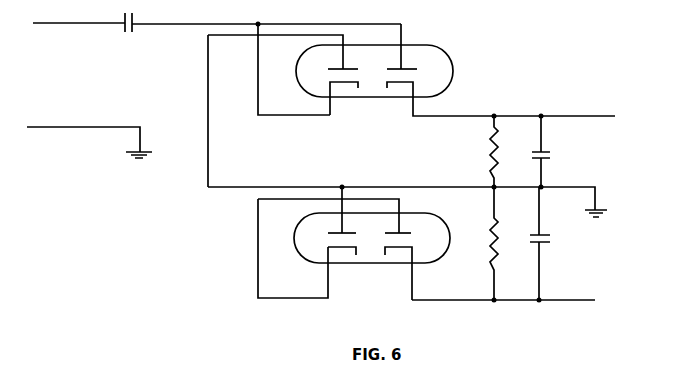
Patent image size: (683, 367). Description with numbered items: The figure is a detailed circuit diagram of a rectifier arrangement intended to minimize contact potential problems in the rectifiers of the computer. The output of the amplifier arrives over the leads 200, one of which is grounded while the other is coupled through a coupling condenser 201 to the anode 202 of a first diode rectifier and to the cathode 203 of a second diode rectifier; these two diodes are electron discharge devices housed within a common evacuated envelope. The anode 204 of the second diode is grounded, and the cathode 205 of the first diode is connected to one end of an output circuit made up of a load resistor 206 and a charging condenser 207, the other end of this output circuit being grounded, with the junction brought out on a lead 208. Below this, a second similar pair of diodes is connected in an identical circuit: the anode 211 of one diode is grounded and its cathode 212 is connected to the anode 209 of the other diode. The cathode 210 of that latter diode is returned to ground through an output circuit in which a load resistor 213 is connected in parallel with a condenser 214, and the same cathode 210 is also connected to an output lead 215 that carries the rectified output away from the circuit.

The leads 200 is at (68, 23).
The coupling condenser 201 is at (133, 27).
The anode 202 is at (404, 68).
The cathode 203 is at (330, 88).
The anode 204 is at (342, 67).
The cathode 205 is at (413, 89).
The load resistor 206 is at (490, 146).
The charging condenser 207 is at (547, 153).
The output lead 208 is at (553, 117).
The anode 209 is at (408, 233).
The cathode 210 is at (412, 248).
The anode 211 is at (340, 233).
The cathode 212 is at (328, 256).
The load resistor 213 is at (498, 238).
The condenser 214 is at (546, 243).
The output lead 215 is at (557, 300).